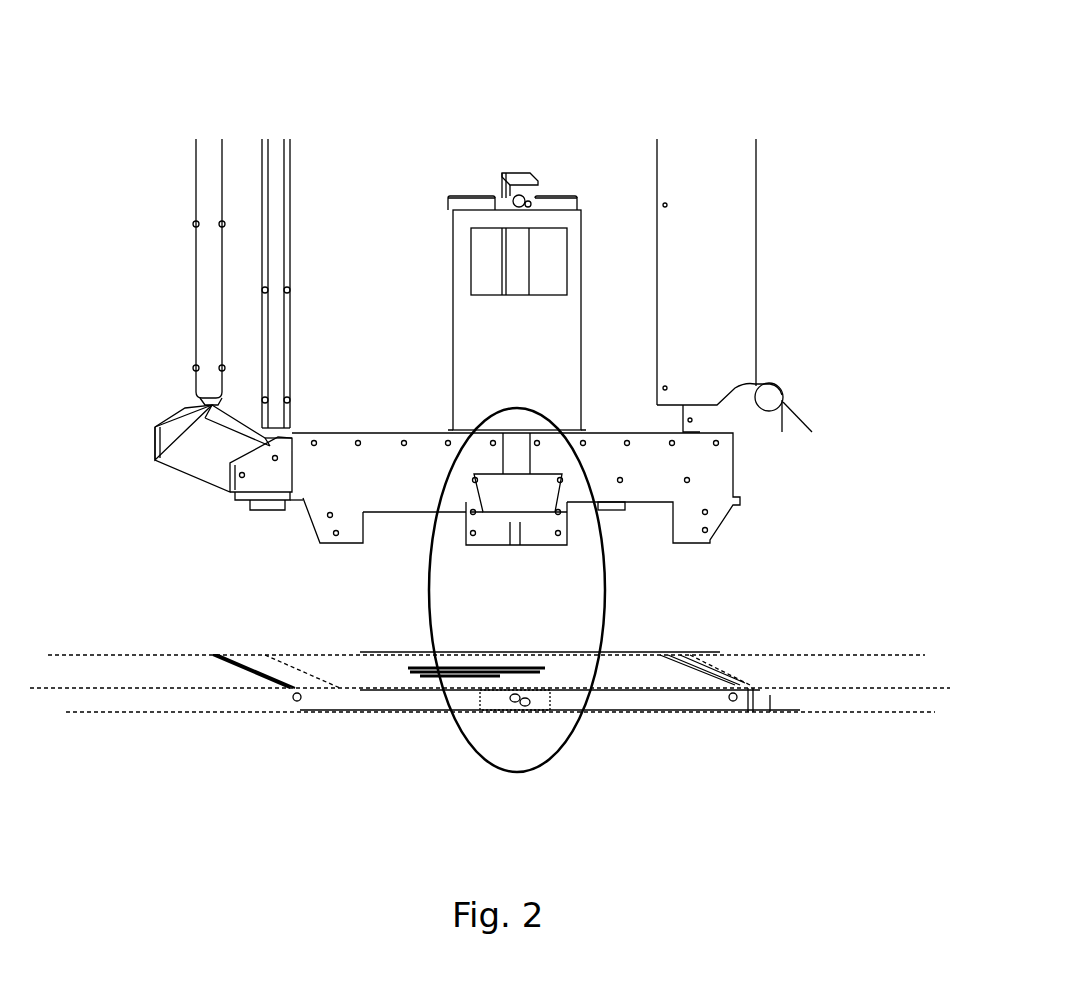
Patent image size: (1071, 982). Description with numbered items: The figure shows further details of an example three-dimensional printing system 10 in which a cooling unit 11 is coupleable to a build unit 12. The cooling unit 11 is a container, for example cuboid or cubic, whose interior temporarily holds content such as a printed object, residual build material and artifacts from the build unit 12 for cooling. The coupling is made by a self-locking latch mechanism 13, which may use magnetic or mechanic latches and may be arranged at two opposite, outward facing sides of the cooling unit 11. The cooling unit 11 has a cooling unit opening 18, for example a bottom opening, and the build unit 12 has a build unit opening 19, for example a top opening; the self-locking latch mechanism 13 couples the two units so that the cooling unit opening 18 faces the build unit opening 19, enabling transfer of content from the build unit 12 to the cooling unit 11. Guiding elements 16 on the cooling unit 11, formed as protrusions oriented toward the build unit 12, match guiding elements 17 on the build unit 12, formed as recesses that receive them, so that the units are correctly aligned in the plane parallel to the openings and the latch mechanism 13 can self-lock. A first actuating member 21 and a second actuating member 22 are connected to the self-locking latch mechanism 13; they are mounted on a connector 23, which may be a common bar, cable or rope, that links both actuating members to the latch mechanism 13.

The 3D printing system 10 is at (720, 45).
The cooling unit 11 is at (772, 253).
The build unit 12 is at (631, 727).
The self-locking latch mechanism 13 is at (461, 722).
The guiding elements 16 is at (306, 522).
The guiding elements 17 is at (263, 658).
The cooling unit opening 18 is at (634, 506).
The build unit opening 19 is at (622, 672).
The first actuating member 21 is at (528, 204).
The second actuating member 22 is at (533, 171).
The connector 23 is at (517, 268).